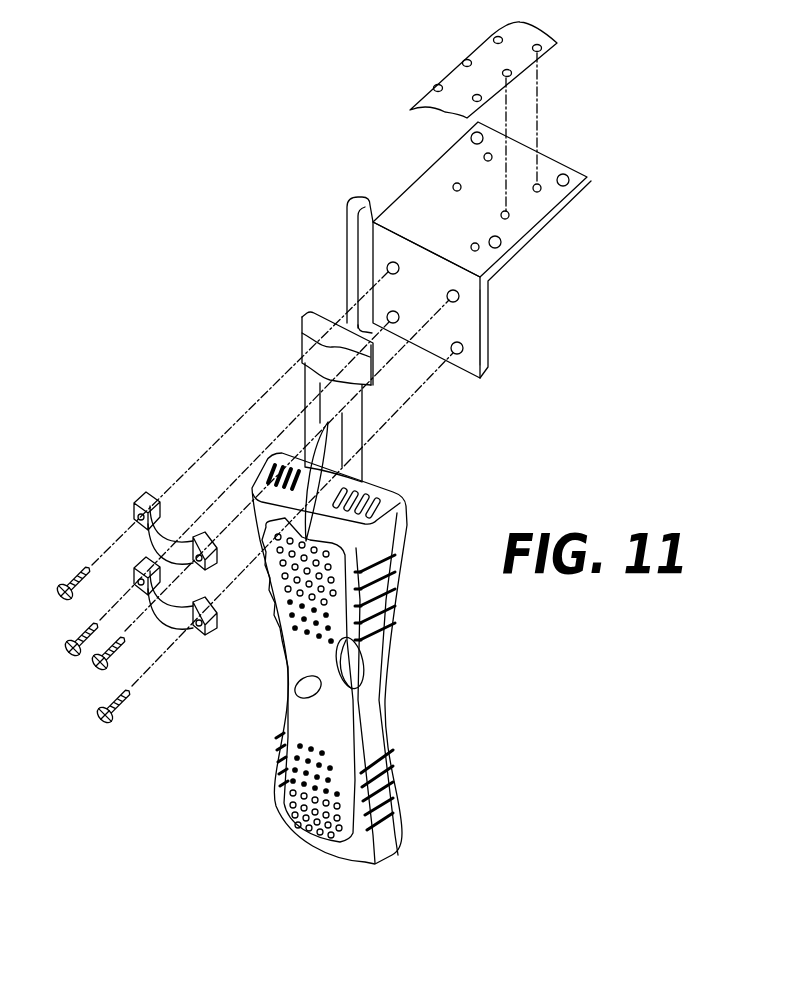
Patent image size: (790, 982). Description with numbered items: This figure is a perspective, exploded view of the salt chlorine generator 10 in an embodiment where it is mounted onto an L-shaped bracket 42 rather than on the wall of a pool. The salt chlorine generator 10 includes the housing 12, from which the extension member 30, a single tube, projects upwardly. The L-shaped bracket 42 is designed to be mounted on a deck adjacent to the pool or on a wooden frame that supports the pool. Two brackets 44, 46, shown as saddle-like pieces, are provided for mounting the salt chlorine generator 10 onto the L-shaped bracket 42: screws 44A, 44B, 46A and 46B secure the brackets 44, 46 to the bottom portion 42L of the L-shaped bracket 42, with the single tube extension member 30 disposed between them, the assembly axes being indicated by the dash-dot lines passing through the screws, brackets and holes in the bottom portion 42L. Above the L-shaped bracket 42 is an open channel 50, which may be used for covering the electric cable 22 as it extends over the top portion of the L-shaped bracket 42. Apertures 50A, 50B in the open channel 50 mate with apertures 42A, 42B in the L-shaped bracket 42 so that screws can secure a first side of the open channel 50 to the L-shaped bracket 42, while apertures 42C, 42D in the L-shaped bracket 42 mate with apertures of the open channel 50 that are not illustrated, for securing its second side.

The salt chlorine generator 10 is at (462, 684).
The housing 12 is at (390, 520).
The electrical cable 22 is at (352, 276).
The extension member 30 is at (360, 420).
The L-shaped bracket 42 is at (465, 247).
The aperture 42A is at (539, 184).
The aperture 42B is at (500, 243).
The aperture 42C is at (372, 195).
The aperture 42D is at (484, 157).
The bottom portion 42L is at (484, 358).
The bracket 44 is at (172, 518).
The screw 44A is at (64, 590).
The screw 44B is at (108, 665).
The bracket 46 is at (207, 627).
The screw 46A is at (68, 660).
The screw 46B is at (100, 725).
The open channel 50 is at (498, 106).
The aperture 50A is at (535, 45).
The aperture 50B is at (474, 95).